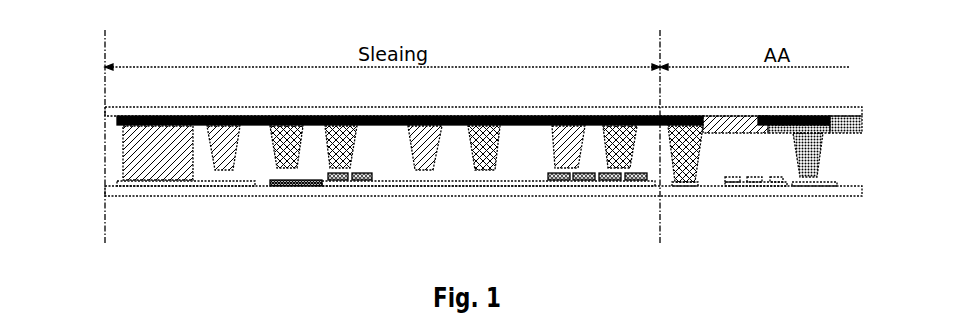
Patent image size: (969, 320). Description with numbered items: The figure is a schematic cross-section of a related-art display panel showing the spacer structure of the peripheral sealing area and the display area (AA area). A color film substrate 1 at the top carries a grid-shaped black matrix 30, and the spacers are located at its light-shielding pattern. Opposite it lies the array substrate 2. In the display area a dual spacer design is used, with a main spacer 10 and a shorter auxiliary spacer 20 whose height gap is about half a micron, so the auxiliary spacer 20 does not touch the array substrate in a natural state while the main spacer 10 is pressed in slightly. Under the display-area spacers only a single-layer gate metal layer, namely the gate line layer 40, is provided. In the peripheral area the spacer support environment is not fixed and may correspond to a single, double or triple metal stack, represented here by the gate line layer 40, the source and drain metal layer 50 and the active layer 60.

The color film substrate 1 is at (110, 108).
The substrate 2 is at (138, 197).
The main spacer 10 is at (235, 125).
The auxiliary spacer 20 is at (818, 160).
The black matrix 30 is at (833, 115).
The gate line layer 40 is at (218, 183).
The source and drain metal layer 50 is at (310, 186).
The active layer 60 is at (863, 123).